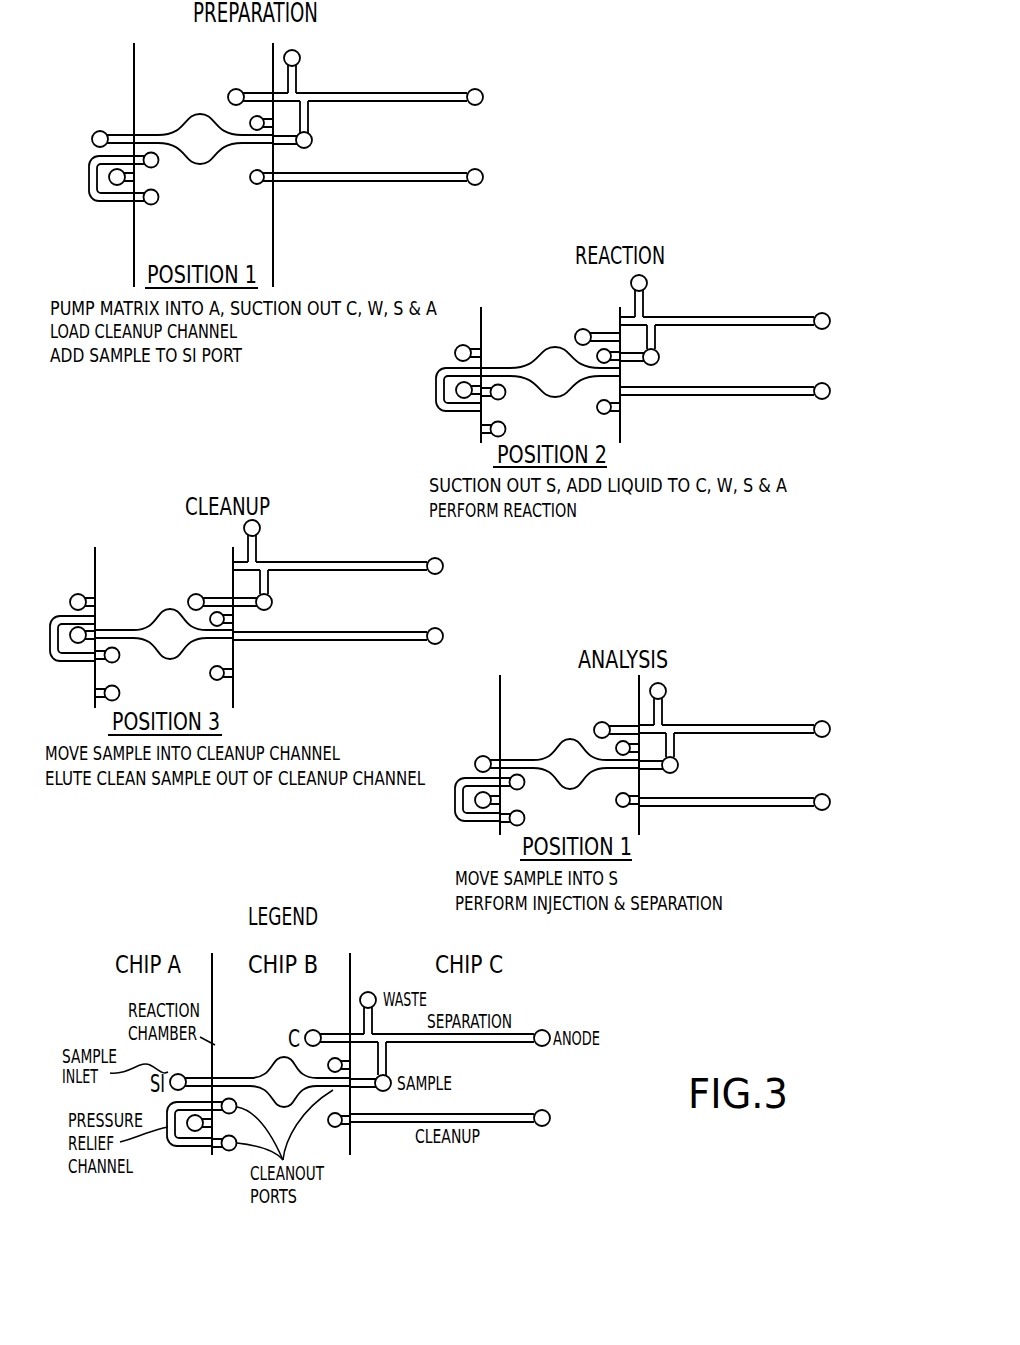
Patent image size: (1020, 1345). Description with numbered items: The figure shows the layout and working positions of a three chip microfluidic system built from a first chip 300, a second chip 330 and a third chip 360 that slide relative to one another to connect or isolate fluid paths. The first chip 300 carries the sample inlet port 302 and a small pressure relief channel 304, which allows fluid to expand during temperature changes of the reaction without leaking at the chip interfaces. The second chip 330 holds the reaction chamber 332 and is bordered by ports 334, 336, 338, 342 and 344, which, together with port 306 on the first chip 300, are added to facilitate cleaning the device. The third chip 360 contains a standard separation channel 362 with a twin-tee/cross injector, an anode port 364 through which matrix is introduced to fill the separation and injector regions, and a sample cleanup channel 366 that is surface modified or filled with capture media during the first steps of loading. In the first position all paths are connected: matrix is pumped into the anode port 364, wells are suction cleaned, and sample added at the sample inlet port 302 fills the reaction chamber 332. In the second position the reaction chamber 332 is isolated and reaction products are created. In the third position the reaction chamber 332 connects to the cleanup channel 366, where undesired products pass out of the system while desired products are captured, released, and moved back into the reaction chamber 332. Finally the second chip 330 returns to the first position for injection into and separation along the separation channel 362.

The first chip 300 is at (89, 67).
The sample inlet port 302 is at (97, 130).
The pressure relief channel 304 is at (90, 187).
The port 306 is at (115, 186).
The second chip 330 is at (199, 67).
The reaction chamber 332 is at (206, 140).
The port 334 is at (238, 91).
The port 336 is at (243, 136).
The port 338 is at (254, 185).
The port 342 is at (160, 166).
The port 344 is at (155, 205).
The third chip 360 is at (395, 67).
The separation channel 362 is at (410, 92).
The anode port 364 is at (477, 89).
The cleanup channel 366 is at (385, 172).